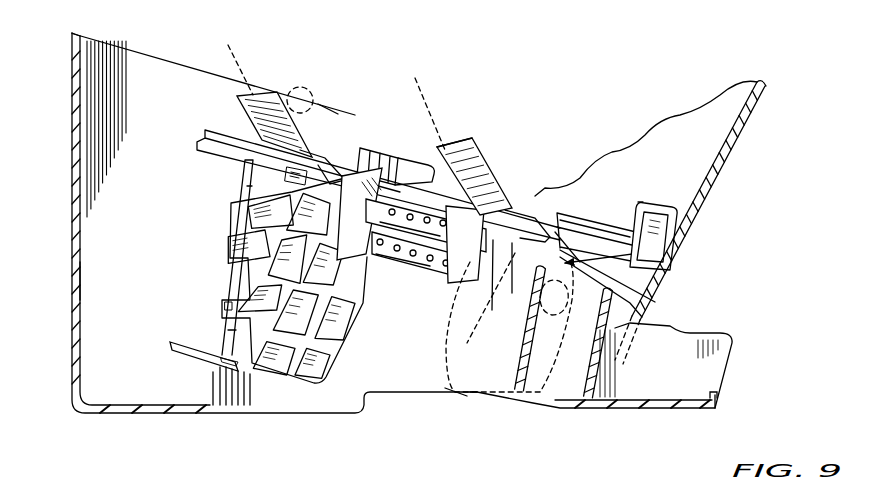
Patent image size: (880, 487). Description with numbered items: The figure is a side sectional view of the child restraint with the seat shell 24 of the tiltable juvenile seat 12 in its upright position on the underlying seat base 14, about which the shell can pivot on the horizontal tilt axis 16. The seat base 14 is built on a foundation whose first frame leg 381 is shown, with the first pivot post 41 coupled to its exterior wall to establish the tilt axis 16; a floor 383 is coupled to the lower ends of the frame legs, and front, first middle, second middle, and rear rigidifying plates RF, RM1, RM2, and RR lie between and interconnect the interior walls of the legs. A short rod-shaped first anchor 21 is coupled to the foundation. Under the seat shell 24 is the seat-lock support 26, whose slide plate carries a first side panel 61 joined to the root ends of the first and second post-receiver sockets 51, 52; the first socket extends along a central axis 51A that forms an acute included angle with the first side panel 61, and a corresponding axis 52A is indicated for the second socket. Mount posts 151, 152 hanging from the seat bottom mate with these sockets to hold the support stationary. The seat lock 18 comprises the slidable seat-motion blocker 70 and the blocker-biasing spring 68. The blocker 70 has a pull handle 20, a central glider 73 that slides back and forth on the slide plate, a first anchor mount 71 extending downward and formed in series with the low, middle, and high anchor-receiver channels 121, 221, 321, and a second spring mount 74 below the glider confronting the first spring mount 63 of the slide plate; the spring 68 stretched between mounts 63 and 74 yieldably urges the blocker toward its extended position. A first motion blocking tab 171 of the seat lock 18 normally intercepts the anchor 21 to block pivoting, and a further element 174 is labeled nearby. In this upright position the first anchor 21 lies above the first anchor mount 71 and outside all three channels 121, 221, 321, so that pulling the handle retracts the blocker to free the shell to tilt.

The tiltable juvenile seat 12 is at (776, 212).
The seat base 14 is at (70, 230).
The pivot (tilt) axis 16 is at (550, 298).
The seat lock 18 is at (600, 216).
The pull handle 20 is at (670, 203).
The first anchor 21 is at (318, 103).
The seat shell 24 is at (767, 128).
The seat-lock support 26 is at (657, 302).
The first pivot post 41 is at (565, 280).
The first post-receiver socket 51 is at (485, 173).
The central axis 51A is at (426, 80).
The second post-receiver socket 52 is at (293, 148).
The first leg axis 52A is at (236, 44).
The first side panel 61 is at (480, 208).
The first spring mount 63 is at (447, 284).
The blocker-biasing spring 68 is at (408, 258).
The slidable seat-motion blocker 70 is at (620, 221).
The first anchor mount 71 is at (290, 397).
The central glider 73 is at (374, 162).
The second spring mount 74 is at (361, 272).
The first (low) anchor-receiver channel 121 is at (242, 330).
The mount post 151 is at (473, 145).
The mount post 152 is at (273, 94).
The first motion blocking tab 171 is at (250, 163).
The seat frame member 174 is at (470, 310).
The second (middle) anchor-receiver channel 221 is at (222, 272).
The third (high) anchor-receiver channel 321 is at (240, 182).
The first frame leg 381 is at (163, 90).
The floor 383 is at (138, 414).
The front rigidifying plate RF is at (82, 262).
The rear rigidifying plate RR is at (617, 328).
The first middle rigidifying plate RM1 is at (213, 394).
The second middle rigidifying plate RM2 is at (520, 353).